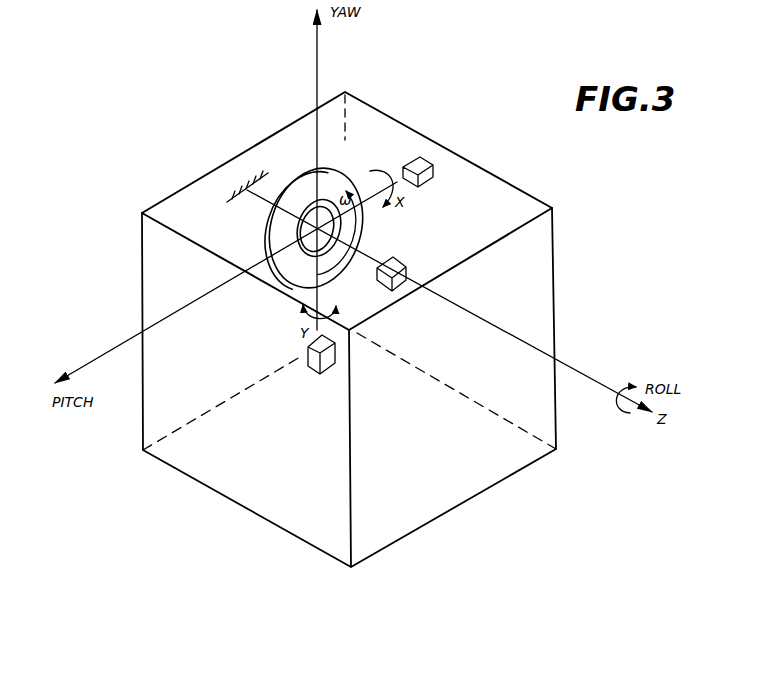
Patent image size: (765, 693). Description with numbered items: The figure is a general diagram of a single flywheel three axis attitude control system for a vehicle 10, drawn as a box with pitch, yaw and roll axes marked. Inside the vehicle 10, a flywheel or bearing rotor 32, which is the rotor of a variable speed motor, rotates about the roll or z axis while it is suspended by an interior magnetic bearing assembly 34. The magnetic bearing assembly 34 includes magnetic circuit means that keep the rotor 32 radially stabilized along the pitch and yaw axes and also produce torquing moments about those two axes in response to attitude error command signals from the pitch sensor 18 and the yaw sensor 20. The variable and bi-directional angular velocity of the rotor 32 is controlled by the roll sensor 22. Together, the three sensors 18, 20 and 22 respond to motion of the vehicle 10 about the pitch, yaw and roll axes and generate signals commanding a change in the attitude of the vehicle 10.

The vehicle 10 is at (410, 129).
The pitch sensor 18 is at (432, 173).
The yaw sensor 20 is at (312, 368).
The roll sensor 22 is at (407, 281).
The flywheel or bearing rotor 32 is at (288, 268).
The magnetic bearing assembly 34 is at (328, 207).